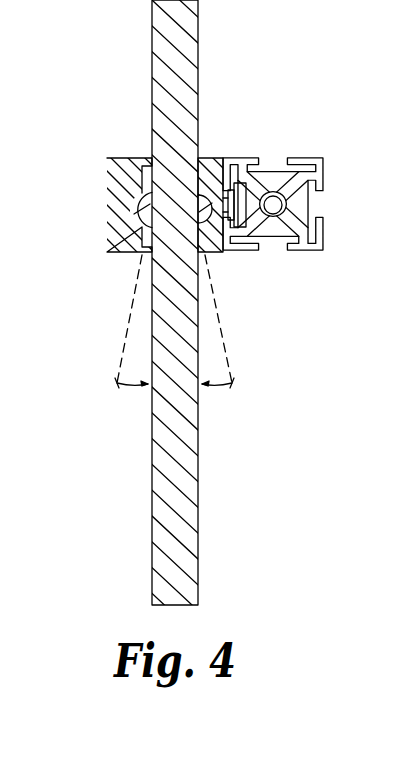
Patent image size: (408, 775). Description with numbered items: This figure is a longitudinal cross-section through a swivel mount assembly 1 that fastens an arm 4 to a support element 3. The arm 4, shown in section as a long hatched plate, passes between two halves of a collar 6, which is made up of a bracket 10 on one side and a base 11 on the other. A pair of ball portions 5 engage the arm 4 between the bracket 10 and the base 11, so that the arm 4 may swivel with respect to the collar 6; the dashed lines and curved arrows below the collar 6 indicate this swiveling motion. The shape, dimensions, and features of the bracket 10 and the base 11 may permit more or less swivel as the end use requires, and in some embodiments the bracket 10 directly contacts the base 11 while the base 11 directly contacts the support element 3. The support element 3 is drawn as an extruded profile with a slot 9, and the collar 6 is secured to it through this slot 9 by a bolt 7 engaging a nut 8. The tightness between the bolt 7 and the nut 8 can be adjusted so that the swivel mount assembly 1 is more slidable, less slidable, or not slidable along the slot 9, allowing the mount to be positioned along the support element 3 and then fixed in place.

The swivel mount assembly 1 is at (108, 273).
The support element 3 is at (322, 176).
The arm 4 is at (152, 63).
The ball portions 5 is at (132, 200).
The collar 6 is at (207, 192).
The bolt 7 is at (258, 215).
The nut 8 is at (288, 208).
The slot 9 is at (258, 192).
The bracket 10 is at (107, 225).
The base 11 is at (216, 230).